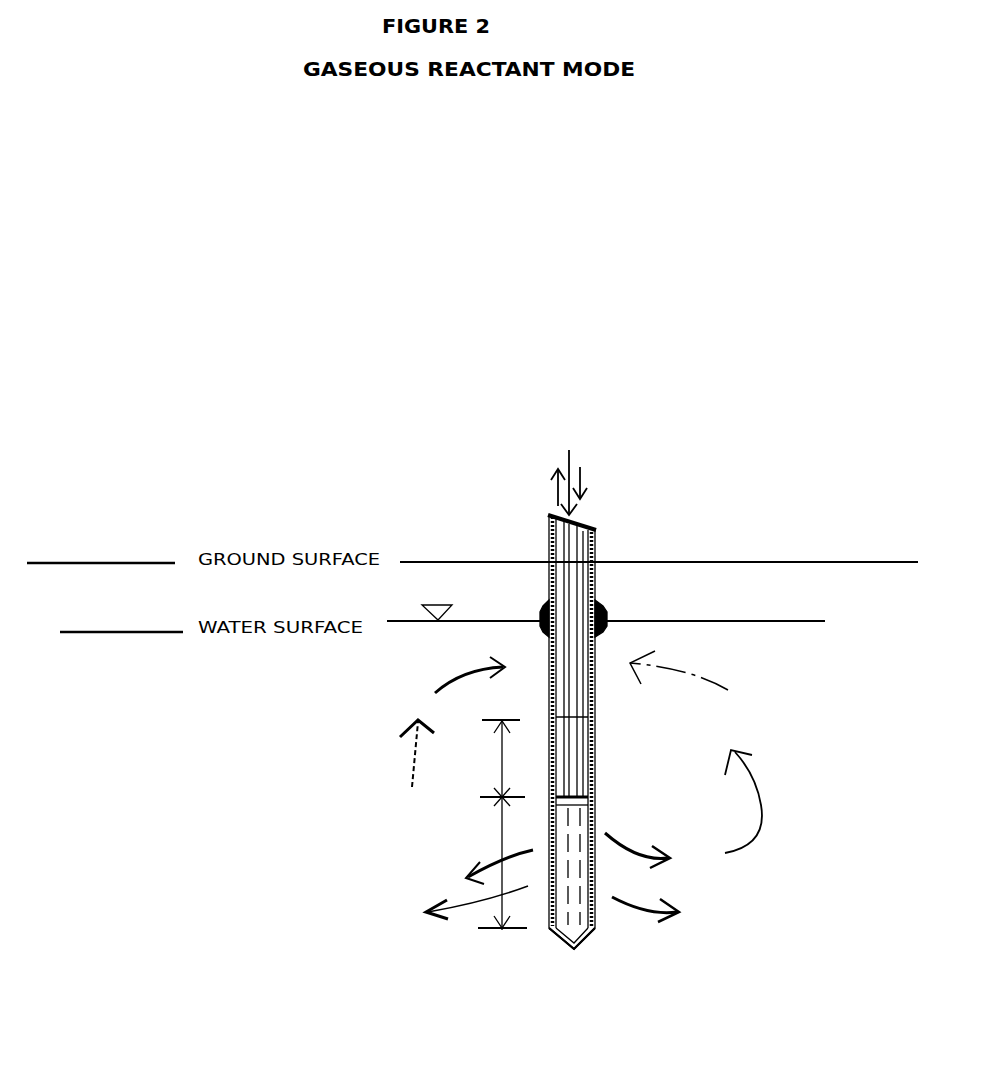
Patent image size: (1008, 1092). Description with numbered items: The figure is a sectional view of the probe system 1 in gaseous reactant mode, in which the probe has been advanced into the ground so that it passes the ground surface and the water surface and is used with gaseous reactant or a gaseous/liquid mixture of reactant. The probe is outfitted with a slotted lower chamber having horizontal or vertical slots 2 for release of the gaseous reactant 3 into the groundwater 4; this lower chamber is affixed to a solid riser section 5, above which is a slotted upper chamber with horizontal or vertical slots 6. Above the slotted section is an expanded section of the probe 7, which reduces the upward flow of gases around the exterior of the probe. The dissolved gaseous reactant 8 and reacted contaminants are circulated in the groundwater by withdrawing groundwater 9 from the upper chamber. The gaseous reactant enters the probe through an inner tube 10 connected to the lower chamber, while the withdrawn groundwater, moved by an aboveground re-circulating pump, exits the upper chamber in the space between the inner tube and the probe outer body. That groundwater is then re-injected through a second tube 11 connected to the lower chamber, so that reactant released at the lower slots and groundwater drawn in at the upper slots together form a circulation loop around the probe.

The probe system 1 is at (533, 534).
The slots of the slotted lower chamber 2 is at (553, 851).
The gaseous reactant 3 is at (569, 472).
The groundwater 4 is at (543, 952).
The solid riser section 5 is at (553, 769).
The slots of the slotted upper chamber 6 is at (550, 675).
The expanded section of the probe 7 is at (615, 630).
The dissolved gaseous reactant 8 is at (555, 786).
The withdrawn groundwater 9 is at (573, 477).
The inner tube 10 is at (591, 531).
The second tube 11 is at (595, 548).